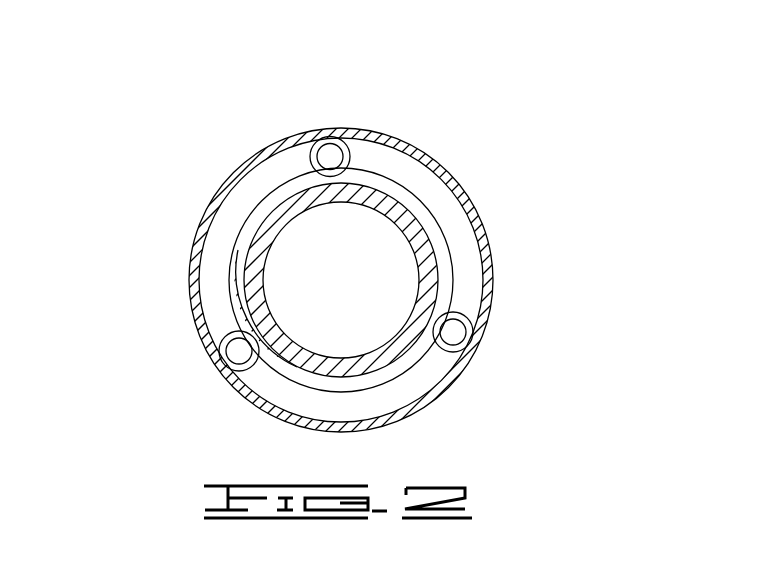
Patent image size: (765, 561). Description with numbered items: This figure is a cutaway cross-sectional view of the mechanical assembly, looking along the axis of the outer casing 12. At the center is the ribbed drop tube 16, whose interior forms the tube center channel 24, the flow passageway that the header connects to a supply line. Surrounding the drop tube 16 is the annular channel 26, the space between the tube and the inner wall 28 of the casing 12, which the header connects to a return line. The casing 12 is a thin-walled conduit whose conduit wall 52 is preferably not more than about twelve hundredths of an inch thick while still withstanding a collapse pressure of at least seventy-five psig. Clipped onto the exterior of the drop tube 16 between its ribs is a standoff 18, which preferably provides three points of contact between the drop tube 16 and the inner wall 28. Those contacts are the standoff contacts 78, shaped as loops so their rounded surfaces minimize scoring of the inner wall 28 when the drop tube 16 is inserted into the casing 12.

The outer casing 12 is at (492, 280).
The ribbed drop tube 16 is at (267, 232).
The standoffs 18 is at (486, 312).
The tube center channel 24 is at (356, 284).
The annular channel 26 is at (207, 278).
The inner wall 28 is at (347, 277).
The conduit wall 52 is at (362, 258).
The standoff contacts 78 is at (322, 145).